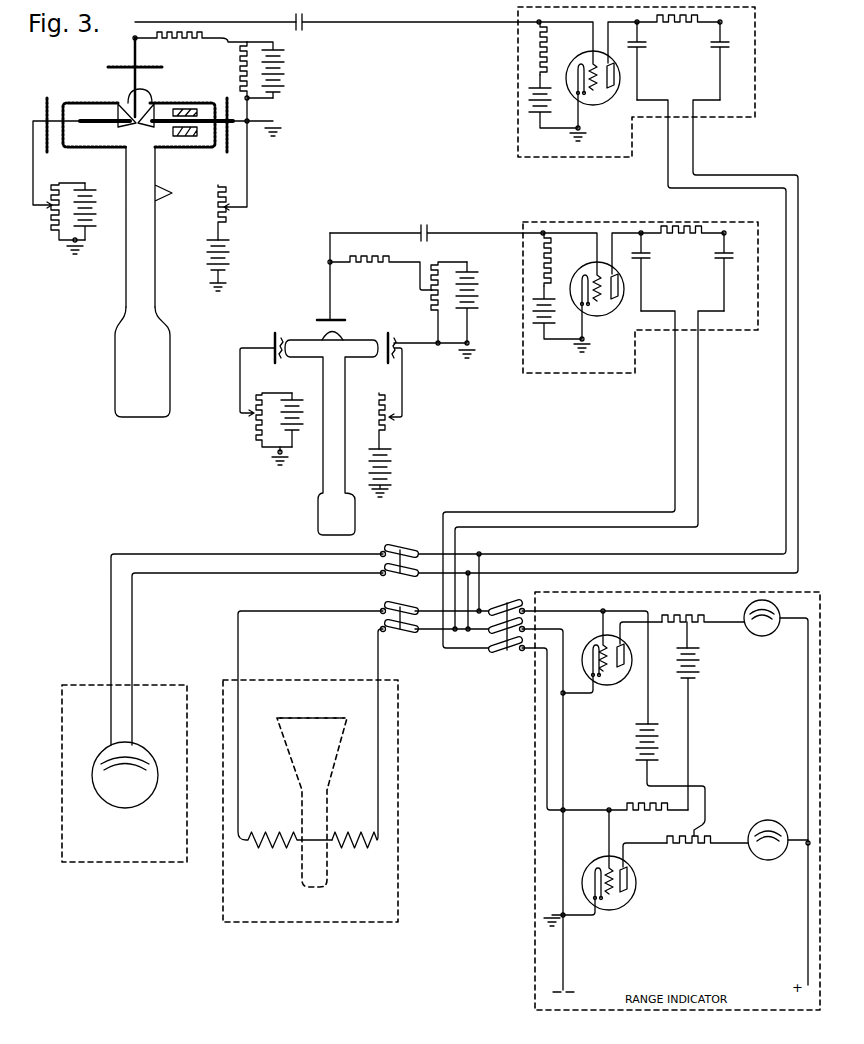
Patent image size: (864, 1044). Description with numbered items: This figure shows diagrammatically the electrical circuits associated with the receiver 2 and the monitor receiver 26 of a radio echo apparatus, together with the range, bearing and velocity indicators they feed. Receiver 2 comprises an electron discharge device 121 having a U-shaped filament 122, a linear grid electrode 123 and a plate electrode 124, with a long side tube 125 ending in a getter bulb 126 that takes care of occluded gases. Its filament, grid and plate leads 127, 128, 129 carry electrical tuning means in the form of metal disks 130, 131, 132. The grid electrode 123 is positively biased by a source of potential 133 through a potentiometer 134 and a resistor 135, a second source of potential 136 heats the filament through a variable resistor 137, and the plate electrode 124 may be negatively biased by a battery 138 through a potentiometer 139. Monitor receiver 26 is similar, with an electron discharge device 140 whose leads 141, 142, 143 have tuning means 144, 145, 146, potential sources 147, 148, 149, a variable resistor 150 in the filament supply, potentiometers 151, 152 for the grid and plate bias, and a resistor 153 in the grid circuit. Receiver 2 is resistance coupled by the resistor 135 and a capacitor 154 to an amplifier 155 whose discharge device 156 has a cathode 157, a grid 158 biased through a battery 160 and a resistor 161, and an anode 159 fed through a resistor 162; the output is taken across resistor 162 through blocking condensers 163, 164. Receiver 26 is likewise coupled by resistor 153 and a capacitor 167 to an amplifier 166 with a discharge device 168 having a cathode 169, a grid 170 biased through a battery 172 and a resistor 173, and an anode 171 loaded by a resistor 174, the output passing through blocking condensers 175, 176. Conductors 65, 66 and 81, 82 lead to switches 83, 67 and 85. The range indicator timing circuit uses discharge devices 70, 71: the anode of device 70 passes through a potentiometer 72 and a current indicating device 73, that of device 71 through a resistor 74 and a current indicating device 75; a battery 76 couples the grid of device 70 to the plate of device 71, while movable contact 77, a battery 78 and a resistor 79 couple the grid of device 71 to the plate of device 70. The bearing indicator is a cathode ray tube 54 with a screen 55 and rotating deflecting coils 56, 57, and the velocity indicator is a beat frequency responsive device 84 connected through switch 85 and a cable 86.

The receiver 2 is at (112, 297).
The monitor receiver 26 is at (312, 487).
The cathode ray tube 54 is at (332, 765).
The screen 55 is at (310, 718).
The coil 56 is at (272, 838).
The coil 57 is at (355, 838).
The conductor 65 is at (798, 466).
The conductor 66 is at (786, 443).
The switch 67 is at (400, 633).
The electron discharge device 70 is at (588, 646).
The electron discharge device 71 is at (609, 912).
The potentiometer 72 is at (686, 615).
The current indicating device 73 is at (778, 606).
The resistor 74 is at (690, 848).
The current indicating device 75 is at (783, 826).
The battery 76 is at (636, 740).
The movable contact 77 is at (684, 634).
The battery 78 is at (700, 665).
The resistor 79 is at (640, 803).
The conductor 81 is at (675, 412).
The conductor 82 is at (698, 413).
The switch 83 is at (507, 652).
The beat frequency responsive device 84 is at (125, 808).
The switch 85 is at (400, 548).
The cable 86 is at (232, 572).
The electron discharge device 121 is at (126, 152).
The U-shaped filament 122 is at (156, 152).
The linear grid electrode 123 is at (160, 106).
The plate electrode 124 is at (120, 106).
The long side tube 125 is at (155, 248).
The getter bulb 126 is at (162, 367).
The filament lead 127 is at (206, 106).
The grid lead 128 is at (112, 67).
The plate lead 129 is at (60, 103).
The metal disk 130 is at (225, 142).
The metal disk 131 is at (130, 60).
The metal disk 132 is at (45, 100).
The source of potential 133 is at (284, 70).
The potentiometer 134 is at (238, 72).
The resistor 135 is at (191, 49).
The second source of potential 136 is at (228, 253).
The variable resistor 137 is at (224, 217).
The battery 138 is at (98, 215).
The potentiometer 139 is at (56, 210).
The electron discharge device 140 is at (352, 358).
The filament lead 141 is at (388, 338).
The grid lead 142 is at (343, 331).
The plate lead 143 is at (281, 338).
The electrical tuning means 144 is at (397, 343).
The electrical tuning means 145 is at (338, 318).
The electrical tuning means 146 is at (274, 343).
The potential source 147 is at (391, 460).
The potential source 148 is at (478, 290).
The potential source 149 is at (300, 420).
The variable resistor 150 is at (376, 416).
The potentiometer 151 is at (445, 262).
The potentiometer 152 is at (256, 430).
The resistor 153 is at (381, 273).
The capacitor 154 is at (305, 26).
The amplifier 155 is at (518, 150).
The electron discharge device 156 is at (612, 102).
The cathode 157 is at (580, 66).
The grid 158 is at (594, 92).
The anode 159 is at (612, 75).
The battery 160 is at (530, 100).
The resistor 161 is at (535, 52).
The resistor 162 is at (690, 31).
The blocking condenser 163 is at (647, 48).
The blocking condenser 164 is at (729, 48).
The amplifier 166 is at (638, 222).
The capacitor 167 is at (428, 230).
The electron discharge device 168 is at (600, 316).
The cathode 169 is at (580, 284).
The grid 170 is at (603, 272).
The anode 171 is at (616, 288).
The battery 172 is at (532, 315).
The resistor 173 is at (553, 262).
The resistor 174 is at (696, 243).
The blocking condenser 175 is at (651, 258).
The blocking condenser 176 is at (733, 258).